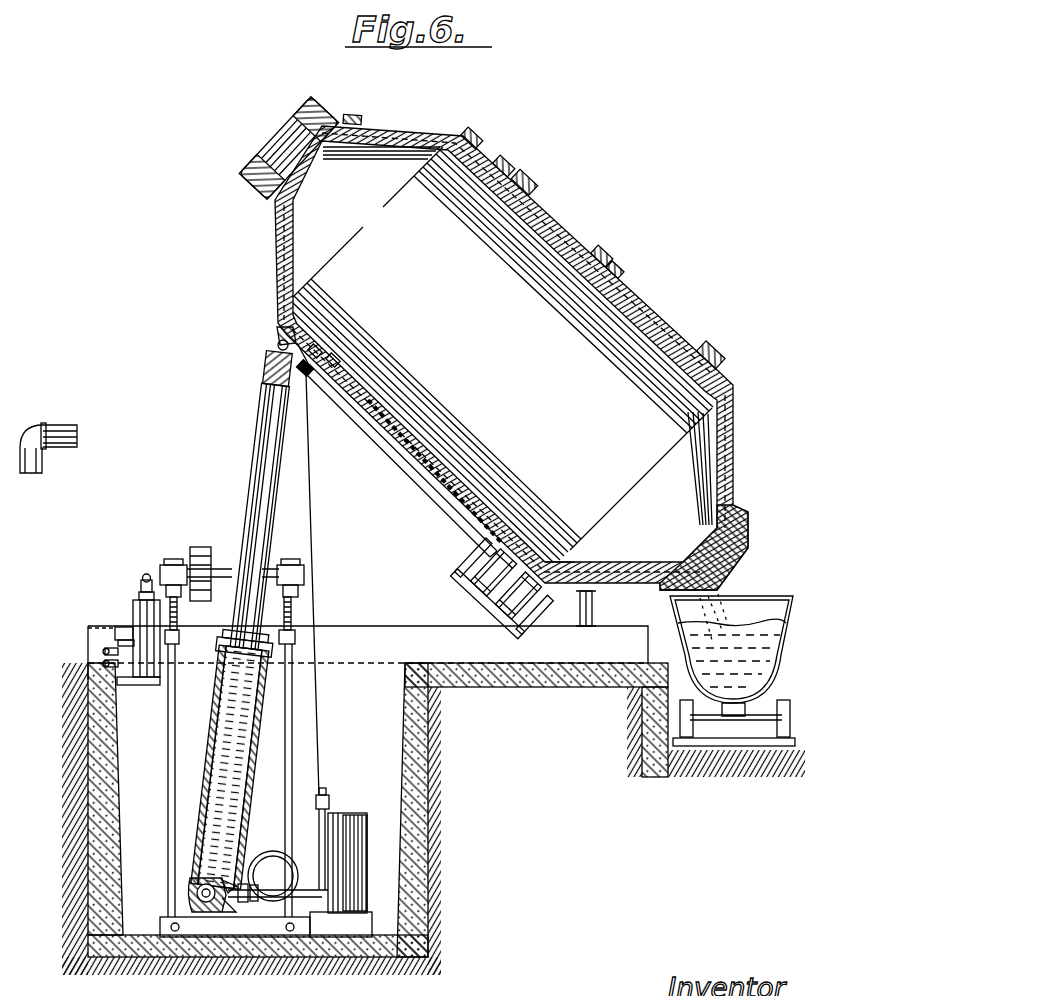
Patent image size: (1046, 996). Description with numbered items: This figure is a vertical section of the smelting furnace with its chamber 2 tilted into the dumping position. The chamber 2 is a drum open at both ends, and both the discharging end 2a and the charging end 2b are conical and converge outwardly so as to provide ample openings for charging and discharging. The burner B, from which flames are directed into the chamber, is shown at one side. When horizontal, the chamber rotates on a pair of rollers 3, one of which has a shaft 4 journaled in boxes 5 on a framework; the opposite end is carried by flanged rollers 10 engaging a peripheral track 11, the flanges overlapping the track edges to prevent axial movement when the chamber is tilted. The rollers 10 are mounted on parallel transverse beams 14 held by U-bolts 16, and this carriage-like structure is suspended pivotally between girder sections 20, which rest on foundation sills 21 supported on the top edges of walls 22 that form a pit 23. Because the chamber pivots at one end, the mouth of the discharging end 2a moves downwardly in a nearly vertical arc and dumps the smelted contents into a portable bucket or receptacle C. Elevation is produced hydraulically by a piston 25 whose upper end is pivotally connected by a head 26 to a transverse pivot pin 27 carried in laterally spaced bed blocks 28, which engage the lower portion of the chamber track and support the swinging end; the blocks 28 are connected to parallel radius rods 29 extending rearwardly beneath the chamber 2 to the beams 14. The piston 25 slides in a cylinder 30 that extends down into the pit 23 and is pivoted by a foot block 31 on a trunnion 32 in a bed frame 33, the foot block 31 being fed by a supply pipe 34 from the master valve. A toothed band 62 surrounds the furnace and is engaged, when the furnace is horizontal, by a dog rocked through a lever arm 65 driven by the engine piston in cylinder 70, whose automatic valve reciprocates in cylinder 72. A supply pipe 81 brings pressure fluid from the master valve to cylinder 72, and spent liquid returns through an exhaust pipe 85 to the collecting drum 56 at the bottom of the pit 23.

The drum or chamber 2 is at (588, 262).
The discharging end 2a is at (727, 490).
The charging end 2b is at (338, 121).
The rollers 3 is at (203, 547).
The shaft 4 is at (225, 569).
The boxes 5 is at (175, 565).
The rollers 10 is at (571, 561).
The peripheral track 11 is at (714, 372).
The transverse beams 14 is at (486, 578).
The U-bolts 16 is at (536, 590).
The girder sections 20 is at (583, 610).
The foundation sills 21 is at (382, 633).
The walls 22 is at (590, 684).
The pit 23 is at (395, 773).
The piston 25 is at (262, 468).
The head 26 is at (277, 347).
The pivot pin 27 is at (266, 366).
The bed blocks 28 is at (281, 334).
The radius rods 29 is at (405, 470).
The cylinder 30 is at (247, 772).
The foot block 31 is at (190, 884).
The trunnion 32 is at (196, 896).
The bed frame 33 is at (172, 928).
The supply pipe 34 is at (273, 852).
The collecting drum 56 is at (343, 826).
The toothed band 62 is at (528, 188).
The lever arm 65 is at (145, 585).
The cylinder 70 is at (135, 611).
The cylinder 72 is at (160, 659).
The supply pipe 81 is at (105, 652).
The exhaust pipe 85 is at (106, 665).
The burner B is at (62, 432).
The portable bucket or receptacle C is at (764, 615).